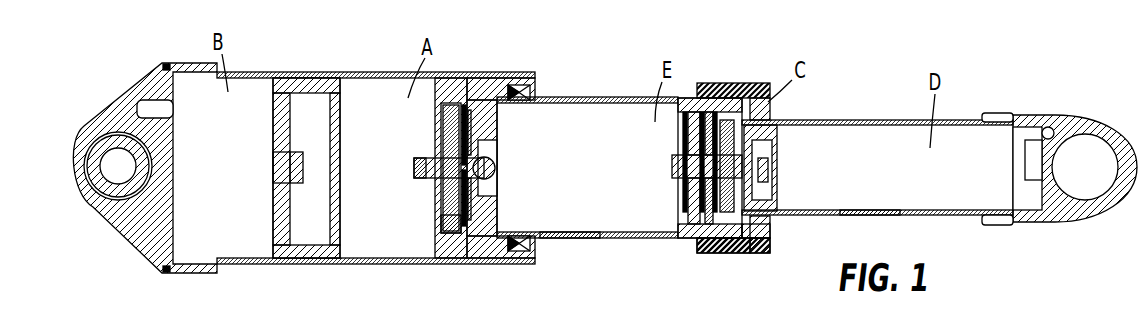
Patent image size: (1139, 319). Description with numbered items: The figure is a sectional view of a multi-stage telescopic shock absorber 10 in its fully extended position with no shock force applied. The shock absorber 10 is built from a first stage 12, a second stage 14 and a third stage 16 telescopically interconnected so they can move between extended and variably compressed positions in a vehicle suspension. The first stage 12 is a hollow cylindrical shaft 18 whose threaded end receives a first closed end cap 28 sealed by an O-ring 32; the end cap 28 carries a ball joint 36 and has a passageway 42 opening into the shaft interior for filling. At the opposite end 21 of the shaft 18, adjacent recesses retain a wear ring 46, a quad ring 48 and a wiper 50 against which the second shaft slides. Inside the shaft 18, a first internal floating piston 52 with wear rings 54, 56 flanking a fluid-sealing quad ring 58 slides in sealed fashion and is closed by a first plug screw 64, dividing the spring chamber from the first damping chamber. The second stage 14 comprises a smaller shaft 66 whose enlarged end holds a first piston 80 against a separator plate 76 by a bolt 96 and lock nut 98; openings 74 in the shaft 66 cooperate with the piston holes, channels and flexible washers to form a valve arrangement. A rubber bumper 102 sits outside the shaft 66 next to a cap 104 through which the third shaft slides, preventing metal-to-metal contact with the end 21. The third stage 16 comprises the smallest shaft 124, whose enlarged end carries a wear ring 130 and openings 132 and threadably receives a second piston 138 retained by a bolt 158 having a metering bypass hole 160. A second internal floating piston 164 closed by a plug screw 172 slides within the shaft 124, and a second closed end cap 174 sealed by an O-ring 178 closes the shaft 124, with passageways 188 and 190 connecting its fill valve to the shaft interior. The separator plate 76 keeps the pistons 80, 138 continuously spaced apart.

The shock absorber 10 is at (644, 50).
The first stage 12 is at (374, 66).
The second stage 14 is at (587, 167).
The third stage 16 is at (877, 135).
The shaft 18 is at (395, 264).
The end 21 is at (518, 165).
The first closed end cap 28 is at (108, 122).
The sealing O-ring 32 is at (168, 272).
The ball joint 36 is at (100, 190).
The passageway 42 is at (148, 108).
The wear ring 46 is at (465, 143).
The quad ring 48 is at (518, 251).
The wiper 50 is at (525, 90).
The first internal floating piston 52 is at (298, 165).
The wear ring 54 is at (282, 78).
The wear ring 56 is at (322, 78).
The fluid-sealing quad ring 58 is at (318, 258).
The first plug screw 64 is at (273, 165).
The shaft 66 is at (575, 238).
The openings 74 is at (470, 214).
The separator plate 76 is at (478, 112).
The first piston 80 is at (445, 221).
The bolt 96 is at (496, 166).
The lock nut 98 is at (426, 158).
The rubber bumper 102 is at (725, 253).
The cap 104 is at (770, 245).
The shaft 124 is at (875, 210).
The wear ring 130 is at (690, 240).
The openings 132 is at (730, 168).
The second piston 138 is at (676, 168).
The bolt 158 is at (690, 185).
The bypass hole 160 is at (678, 168).
The second internal floating piston 164 is at (790, 168).
The plug screw 172 is at (772, 176).
The second closed end cap 174 is at (1053, 168).
The sealing O-ring 178 is at (1000, 224).
The passageway 188 is at (1042, 128).
The passageway 190 is at (1032, 212).